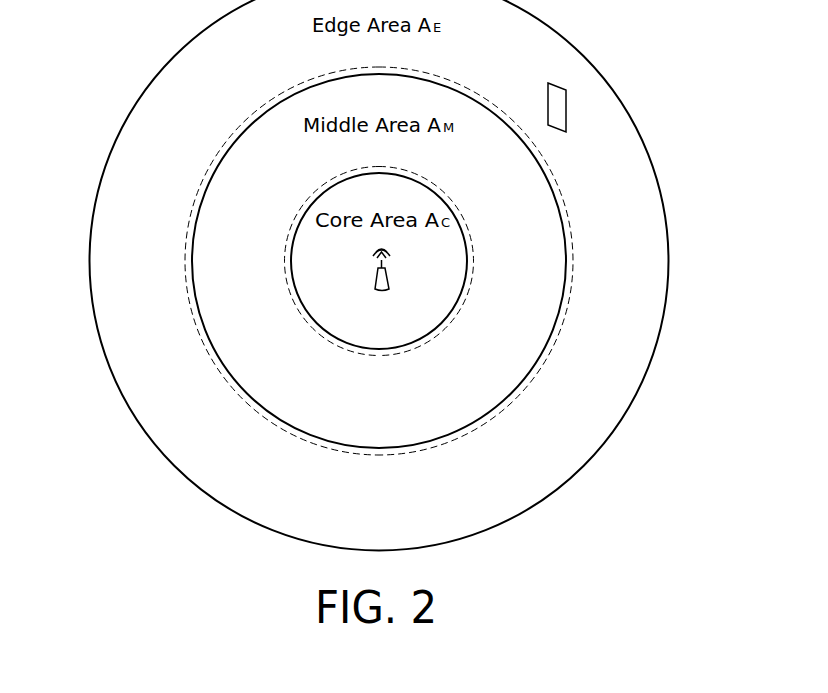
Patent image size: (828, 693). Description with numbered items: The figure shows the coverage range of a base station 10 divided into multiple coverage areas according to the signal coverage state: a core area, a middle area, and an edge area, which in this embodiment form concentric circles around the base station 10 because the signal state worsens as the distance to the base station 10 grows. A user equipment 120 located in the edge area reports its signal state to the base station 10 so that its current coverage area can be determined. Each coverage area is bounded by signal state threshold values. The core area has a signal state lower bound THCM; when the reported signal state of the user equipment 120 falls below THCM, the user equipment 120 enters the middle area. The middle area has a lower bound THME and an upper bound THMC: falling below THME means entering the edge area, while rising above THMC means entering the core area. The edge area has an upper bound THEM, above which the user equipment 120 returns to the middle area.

The base station 10 is at (387, 275).
The user equipment 120 is at (567, 108).
The signal state lower bound of the core area THCM is at (302, 212).
The signal state upper bound of the middle area THMC is at (468, 265).
The signal state lower bound of the middle area THME is at (198, 332).
The signal state upper bound of the edge area THEM is at (547, 353).